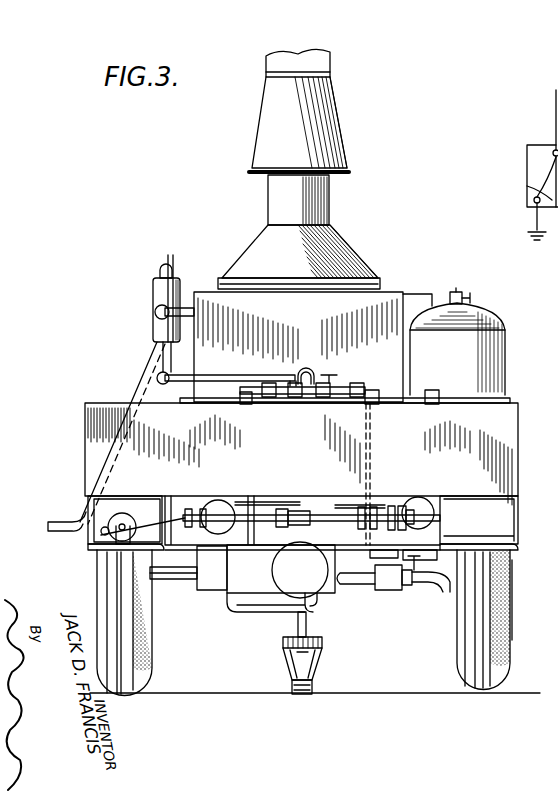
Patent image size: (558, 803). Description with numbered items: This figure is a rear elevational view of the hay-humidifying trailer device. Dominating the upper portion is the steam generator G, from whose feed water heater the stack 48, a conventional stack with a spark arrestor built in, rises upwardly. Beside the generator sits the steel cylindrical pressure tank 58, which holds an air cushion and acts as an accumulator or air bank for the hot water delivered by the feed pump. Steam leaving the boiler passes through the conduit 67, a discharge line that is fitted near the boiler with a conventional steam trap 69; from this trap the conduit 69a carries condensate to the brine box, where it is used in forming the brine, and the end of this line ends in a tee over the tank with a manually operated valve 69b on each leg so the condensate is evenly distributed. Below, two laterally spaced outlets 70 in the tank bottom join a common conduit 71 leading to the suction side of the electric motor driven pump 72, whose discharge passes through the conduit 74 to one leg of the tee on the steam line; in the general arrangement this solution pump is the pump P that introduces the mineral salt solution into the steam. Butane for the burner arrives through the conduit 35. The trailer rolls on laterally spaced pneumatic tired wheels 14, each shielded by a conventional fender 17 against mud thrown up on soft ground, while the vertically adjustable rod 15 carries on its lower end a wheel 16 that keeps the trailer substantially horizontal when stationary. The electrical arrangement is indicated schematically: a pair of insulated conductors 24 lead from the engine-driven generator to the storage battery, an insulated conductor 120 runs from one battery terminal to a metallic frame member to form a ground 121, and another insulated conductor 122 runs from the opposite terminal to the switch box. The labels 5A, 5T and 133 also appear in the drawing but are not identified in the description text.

The stack 48 is at (322, 148).
The steam generator G is at (392, 268).
The pressure tank 58 is at (486, 361).
The main housing 5A is at (503, 456).
The steam trap 69 is at (155, 317).
The conduit 67 is at (140, 382).
The pump P is at (84, 532).
The conduit 69a is at (286, 377).
The manually operated valve 69b is at (340, 388).
The fender 17 is at (95, 548).
The electric motor driven pump 72 is at (136, 516).
The conduit 74 is at (108, 528).
The outlets 70 is at (214, 506).
The common conduit 71 is at (310, 512).
The conduit 35 is at (256, 612).
The vertically adjustable rod 15 is at (308, 630).
The wheel 16 is at (318, 686).
The valve 133 is at (410, 594).
The pneumatic tired wheels 14 is at (152, 668).
The tire 5T is at (504, 590).
The insulated electrical conductor 122 is at (556, 130).
The insulated electrical conductors 24 is at (527, 186).
The insulated electrical conductor 120 is at (536, 229).
The ground 121 is at (536, 240).